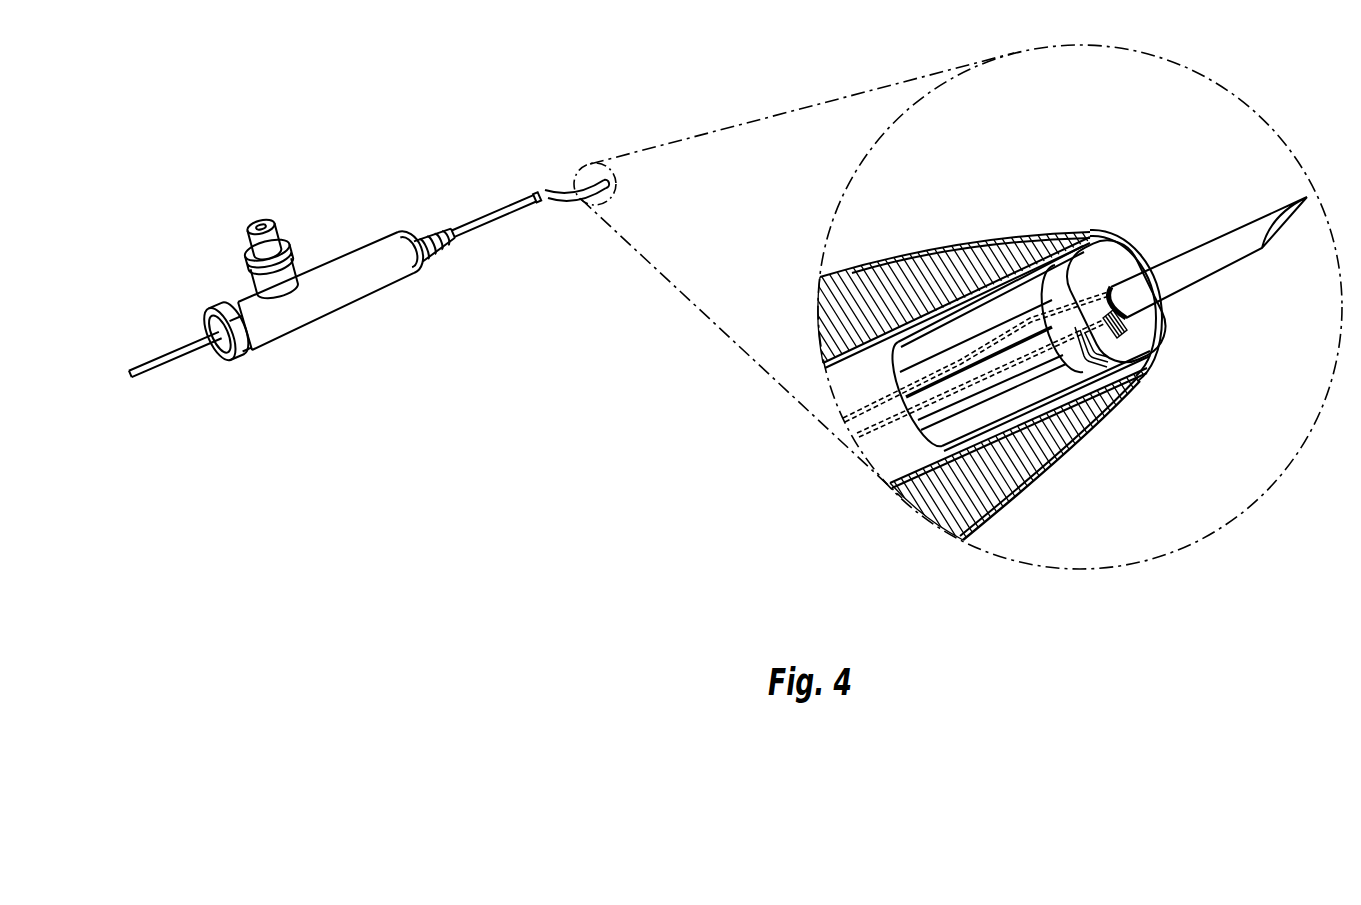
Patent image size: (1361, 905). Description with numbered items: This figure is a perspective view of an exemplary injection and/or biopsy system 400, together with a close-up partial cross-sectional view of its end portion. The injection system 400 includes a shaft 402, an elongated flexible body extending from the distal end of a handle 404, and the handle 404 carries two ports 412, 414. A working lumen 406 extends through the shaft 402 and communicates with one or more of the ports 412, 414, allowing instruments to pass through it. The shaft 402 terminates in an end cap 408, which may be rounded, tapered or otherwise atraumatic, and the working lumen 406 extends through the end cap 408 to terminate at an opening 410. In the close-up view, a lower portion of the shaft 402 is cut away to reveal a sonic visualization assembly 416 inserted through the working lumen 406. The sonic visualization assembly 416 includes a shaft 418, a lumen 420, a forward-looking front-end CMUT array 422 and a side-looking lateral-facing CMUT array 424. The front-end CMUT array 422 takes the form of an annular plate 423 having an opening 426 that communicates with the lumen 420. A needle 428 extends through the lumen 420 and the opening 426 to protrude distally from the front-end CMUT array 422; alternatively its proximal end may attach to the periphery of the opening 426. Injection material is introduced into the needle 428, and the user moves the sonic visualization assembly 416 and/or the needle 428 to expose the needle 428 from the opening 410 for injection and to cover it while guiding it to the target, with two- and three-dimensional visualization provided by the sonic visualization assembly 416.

The injection system 400 is at (499, 191).
The shaft 402 is at (496, 215).
The handle 404 is at (344, 283).
The working lumen 406 is at (872, 358).
The end cap 408 is at (992, 237).
The opening 410 is at (1098, 233).
The port 412 is at (187, 348).
The port 414 is at (283, 222).
The sonic visualization assembly 416 is at (1050, 259).
The shaft 418 is at (882, 456).
The lumen 420 is at (902, 443).
The front-end CMUT array 422 is at (1137, 340).
The annular plate 423 is at (1143, 322).
The lateral-facing CMUT array 424 is at (929, 445).
The opening 426 is at (1111, 289).
The needle 428 is at (1230, 232).